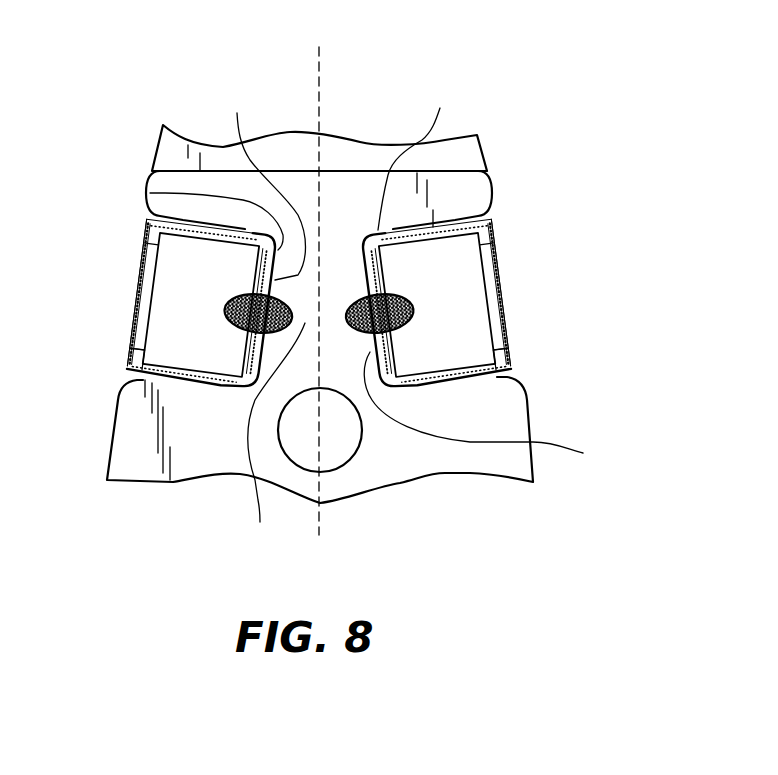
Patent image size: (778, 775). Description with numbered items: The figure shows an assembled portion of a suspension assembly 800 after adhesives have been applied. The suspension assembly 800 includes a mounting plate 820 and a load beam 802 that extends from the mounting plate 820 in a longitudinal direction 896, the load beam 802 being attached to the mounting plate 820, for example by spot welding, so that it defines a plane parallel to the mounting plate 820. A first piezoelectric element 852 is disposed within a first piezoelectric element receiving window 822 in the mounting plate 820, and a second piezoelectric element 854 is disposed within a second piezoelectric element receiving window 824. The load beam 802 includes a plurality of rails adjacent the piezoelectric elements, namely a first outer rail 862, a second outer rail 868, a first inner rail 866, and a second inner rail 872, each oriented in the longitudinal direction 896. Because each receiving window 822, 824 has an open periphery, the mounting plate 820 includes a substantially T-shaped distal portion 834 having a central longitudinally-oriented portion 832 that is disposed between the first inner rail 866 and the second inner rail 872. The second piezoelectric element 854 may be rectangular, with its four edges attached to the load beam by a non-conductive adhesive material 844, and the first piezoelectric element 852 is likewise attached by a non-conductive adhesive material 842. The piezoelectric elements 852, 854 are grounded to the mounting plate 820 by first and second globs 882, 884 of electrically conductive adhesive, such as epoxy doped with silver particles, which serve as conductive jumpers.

The suspension assembly 800 is at (597, 128).
The load beam 802 is at (355, 157).
The mounting plate 820 is at (503, 418).
The first piezoelectric element receiving window 822 is at (431, 156).
The second piezoelectric element receiving window 824 is at (150, 193).
The central longitudinally-oriented portion 832 is at (273, 440).
The substantially T-shaped distal portion 834 is at (460, 193).
The non-conductive adhesive material 842 is at (507, 373).
The non-conductive adhesive material 844 is at (143, 372).
The first piezoelectric element 852 is at (453, 279).
The second piezoelectric element 854 is at (233, 279).
The first outer rail 862 is at (498, 262).
The first inner rail 866 is at (501, 412).
The second outer rail 868 is at (143, 263).
The second inner rail 872 is at (254, 181).
The first glob of electrically conductive adhesive 882 is at (413, 312).
The second glob of electrically conductive adhesive 884 is at (227, 308).
The longitudinal direction 896 is at (316, 80).